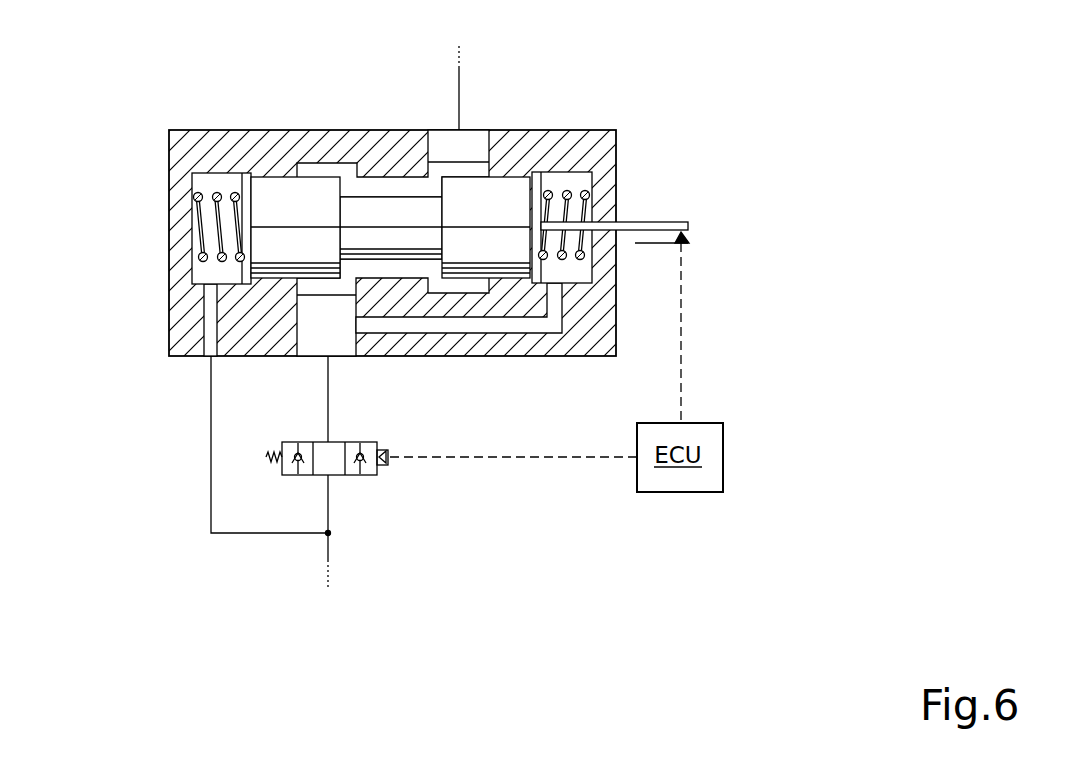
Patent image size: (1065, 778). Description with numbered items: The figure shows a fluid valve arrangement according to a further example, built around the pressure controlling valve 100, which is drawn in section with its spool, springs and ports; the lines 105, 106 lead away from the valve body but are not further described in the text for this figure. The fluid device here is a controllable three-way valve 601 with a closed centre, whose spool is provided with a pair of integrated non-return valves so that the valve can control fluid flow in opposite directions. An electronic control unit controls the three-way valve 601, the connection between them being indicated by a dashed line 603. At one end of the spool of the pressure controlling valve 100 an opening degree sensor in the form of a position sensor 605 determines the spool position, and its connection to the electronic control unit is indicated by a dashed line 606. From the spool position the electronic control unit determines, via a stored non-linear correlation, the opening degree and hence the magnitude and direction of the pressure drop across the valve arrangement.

The pressure controlling valve 100 is at (681, 113).
The outlet/pump port line 105 is at (326, 560).
The supply port line 106 is at (459, 78).
The controllable three-way valve 601 is at (305, 478).
The dashed line 603 is at (458, 457).
The position sensor 605 is at (695, 233).
The dashed line 606 is at (681, 390).